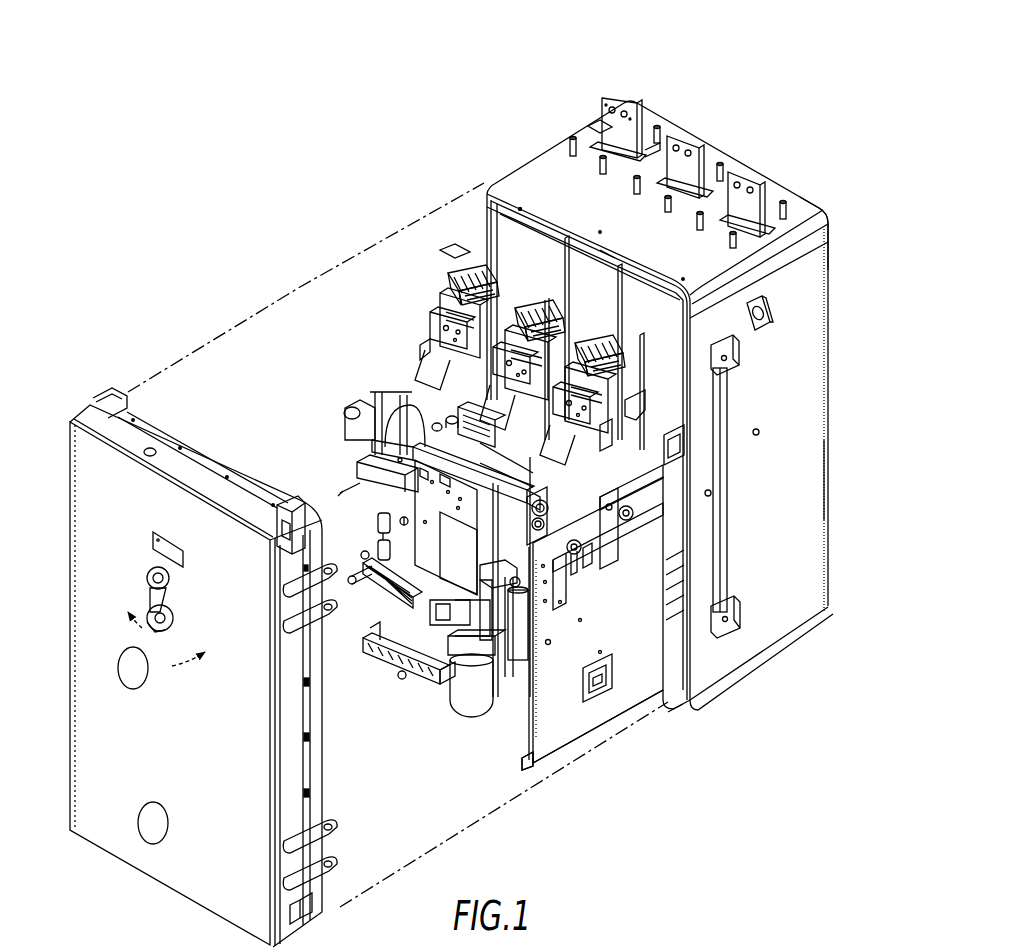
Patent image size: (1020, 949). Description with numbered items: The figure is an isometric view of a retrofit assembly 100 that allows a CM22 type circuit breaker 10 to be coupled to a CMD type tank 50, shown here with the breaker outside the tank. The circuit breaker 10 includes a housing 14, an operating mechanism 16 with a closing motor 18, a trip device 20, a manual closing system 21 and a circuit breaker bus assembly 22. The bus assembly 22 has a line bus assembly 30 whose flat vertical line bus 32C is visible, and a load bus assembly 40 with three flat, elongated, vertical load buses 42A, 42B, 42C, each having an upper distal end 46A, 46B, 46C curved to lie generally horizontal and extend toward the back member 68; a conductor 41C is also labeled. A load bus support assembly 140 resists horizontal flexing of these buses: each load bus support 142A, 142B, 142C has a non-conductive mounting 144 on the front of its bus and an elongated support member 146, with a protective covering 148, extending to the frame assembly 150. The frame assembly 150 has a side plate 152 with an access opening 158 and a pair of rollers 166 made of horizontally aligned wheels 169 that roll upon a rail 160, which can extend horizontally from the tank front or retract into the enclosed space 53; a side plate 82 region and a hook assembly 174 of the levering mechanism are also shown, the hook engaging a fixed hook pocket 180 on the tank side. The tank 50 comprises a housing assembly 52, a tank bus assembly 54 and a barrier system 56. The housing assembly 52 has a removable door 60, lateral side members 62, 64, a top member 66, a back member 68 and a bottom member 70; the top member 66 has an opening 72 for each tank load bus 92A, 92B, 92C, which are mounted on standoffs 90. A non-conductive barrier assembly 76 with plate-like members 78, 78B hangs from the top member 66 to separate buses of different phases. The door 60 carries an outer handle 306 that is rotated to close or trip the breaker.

The CM22 type circuit breaker 10 is at (573, 755).
The housing 14 is at (407, 674).
The operating mechanism 16 is at (479, 456).
The closing motor 18 is at (466, 708).
The trip device 20 is at (390, 640).
The manual closing system 21 is at (358, 378).
The circuit breaker bus assembly 22 is at (463, 270).
The circuit breaker bus assembly line bus assembly 30 is at (702, 400).
The circuit breaker bus assembly line bus assembly bus 32C is at (638, 414).
The circuit breaker bus assembly load bus assembly 40 is at (508, 364).
The conductor 41C is at (553, 316).
The circuit breaker bus assembly load bus assembly bus 42A is at (461, 306).
The circuit breaker bus assembly load bus assembly bus 42B is at (549, 349).
The circuit breaker bus assembly load bus assembly bus 42C is at (611, 407).
The upper distal end 46A is at (451, 278).
The upper distal end 46B is at (538, 305).
The upper distal end 46C is at (606, 353).
The CMD type tank 50 is at (661, 391).
The tank housing assembly 52 is at (769, 462).
The enclosed space 53 is at (521, 208).
The tank bus assembly 54 is at (649, 92).
The barrier system 56 is at (546, 242).
The door 60 is at (203, 667).
The lateral side member 62 is at (825, 265).
The lateral side member 64 is at (493, 207).
The top member 66 is at (800, 207).
The back member 68 is at (828, 481).
The bottom member 70 is at (671, 711).
The opening 72 is at (598, 128).
The non-conductive barrier assembly 76 is at (612, 262).
The first barrier plate 78 is at (590, 243).
The barrier assembly plate-like member 78B is at (637, 284).
The side plate 82 is at (548, 535).
The standoff 90 is at (630, 128).
The tank bus assembly load assembly load bus 92A is at (605, 98).
The tank bus assembly load assembly load bus 92B is at (681, 150).
The tank bus assembly load assembly load bus 92C is at (747, 181).
The retrofit assembly 100 is at (362, 202).
The load bus support assembly 140 is at (310, 272).
The load bus support 142A is at (437, 334).
The load bus support 142B is at (520, 330).
The load bus support 142C is at (553, 445).
The non-conductive mounting 144 is at (451, 303).
The elongated support member 146 is at (425, 366).
The protective covering 148 is at (548, 486).
The frame assembly 150 is at (575, 634).
The side plate 152 is at (532, 769).
The access opening 158 is at (606, 683).
The rail 160 is at (608, 551).
The roller 166 is at (600, 570).
The wheel 169 is at (620, 540).
The hook assembly 174 is at (560, 652).
The fixed hook pocket 180 is at (672, 463).
The outer handle 306 is at (172, 592).